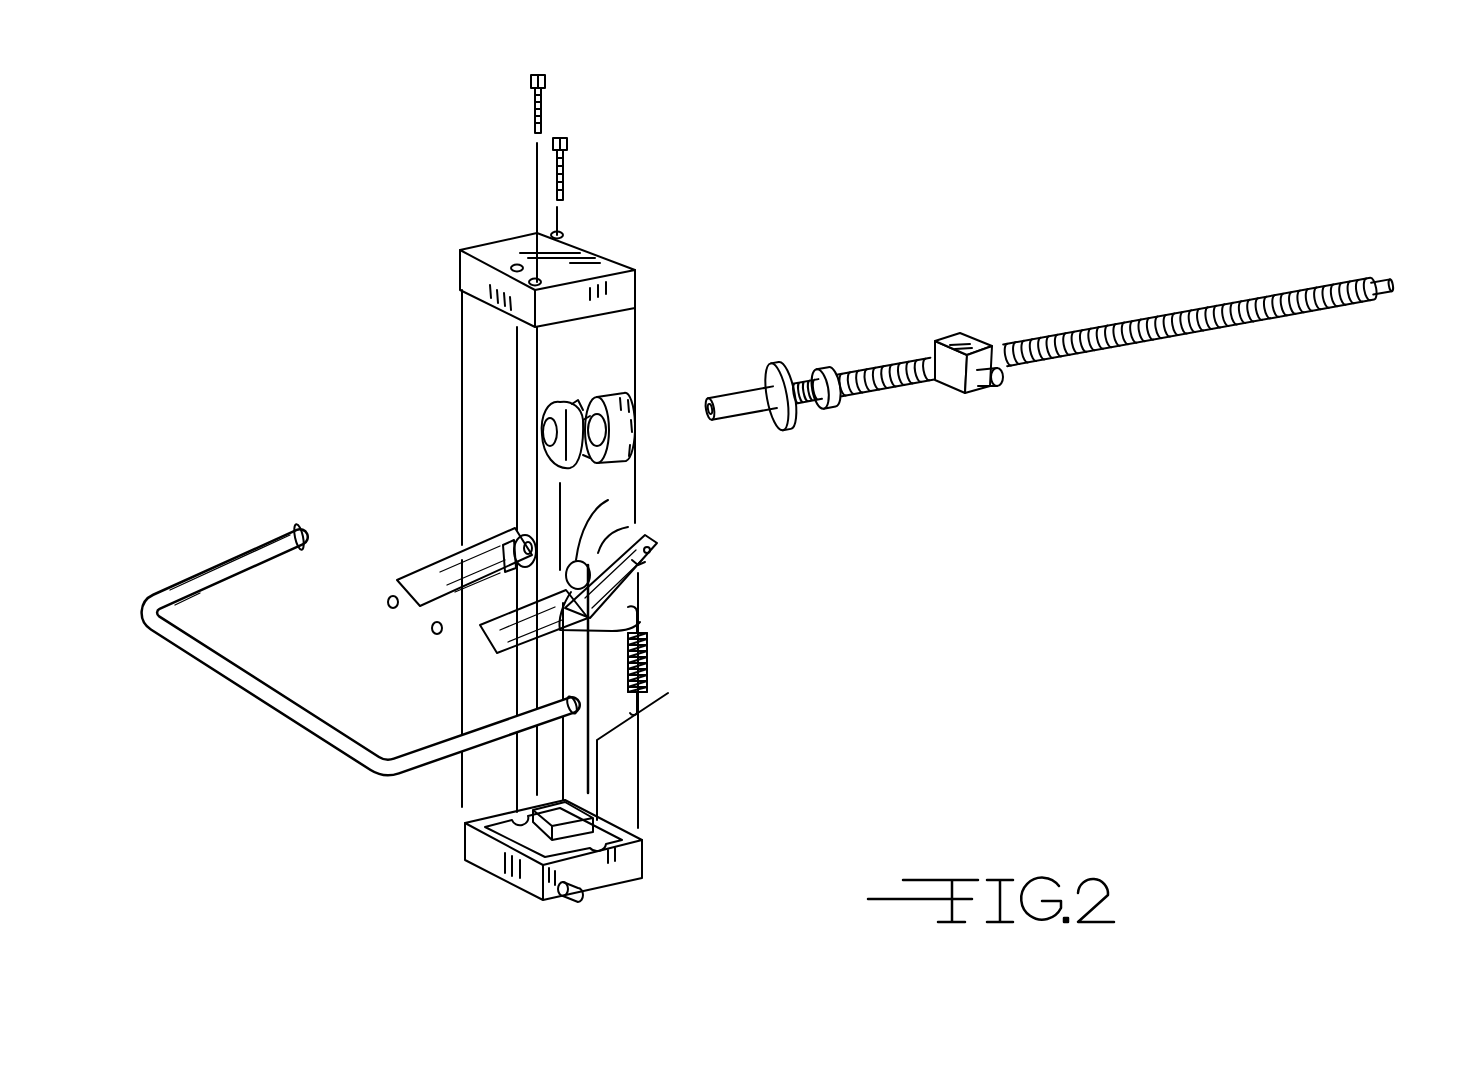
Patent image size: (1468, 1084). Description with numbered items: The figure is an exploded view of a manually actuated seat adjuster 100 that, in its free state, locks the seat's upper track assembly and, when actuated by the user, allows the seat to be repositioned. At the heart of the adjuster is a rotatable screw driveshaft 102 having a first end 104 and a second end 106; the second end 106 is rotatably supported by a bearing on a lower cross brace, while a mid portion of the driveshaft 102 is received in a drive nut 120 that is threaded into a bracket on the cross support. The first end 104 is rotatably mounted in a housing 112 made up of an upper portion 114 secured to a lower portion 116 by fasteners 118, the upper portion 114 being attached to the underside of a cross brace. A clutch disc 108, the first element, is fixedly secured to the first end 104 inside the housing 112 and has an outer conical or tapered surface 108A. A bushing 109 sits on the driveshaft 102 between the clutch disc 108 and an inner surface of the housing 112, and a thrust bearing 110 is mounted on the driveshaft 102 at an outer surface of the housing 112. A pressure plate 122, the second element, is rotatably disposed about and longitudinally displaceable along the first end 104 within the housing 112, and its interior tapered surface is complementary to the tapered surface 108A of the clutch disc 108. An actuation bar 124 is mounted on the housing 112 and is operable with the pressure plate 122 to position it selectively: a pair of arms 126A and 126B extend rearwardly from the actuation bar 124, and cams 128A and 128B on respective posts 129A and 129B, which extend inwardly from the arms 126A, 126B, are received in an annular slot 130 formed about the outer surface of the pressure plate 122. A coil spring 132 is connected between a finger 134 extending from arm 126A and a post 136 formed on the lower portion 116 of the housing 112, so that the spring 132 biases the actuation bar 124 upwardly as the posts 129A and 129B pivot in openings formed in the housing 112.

The seat adjuster 100 is at (738, 177).
The screw driveshaft 102 is at (1070, 330).
The first end 104 is at (732, 400).
The second end 106 is at (1375, 283).
The clutch disc 108 is at (768, 366).
The tapered surface 108A is at (770, 430).
The bushing 109 is at (818, 402).
The thrust bearing 110 is at (830, 366).
The housing 112 is at (462, 283).
The upper portion 114 is at (497, 255).
The lower portion 116 is at (488, 858).
The fasteners 118 is at (550, 82).
The drive nut 120 is at (975, 336).
The pressure plate 122 is at (612, 385).
The actuation bar 124 is at (280, 716).
The arm 126A is at (623, 634).
The arm 126B is at (432, 573).
The cam 128A is at (608, 500).
The cam 128B is at (516, 532).
The post 129A is at (584, 563).
The post 129B is at (516, 550).
The annular slot 130 is at (574, 402).
The spring 132 is at (647, 650).
The finger 134 is at (645, 565).
The post 136 is at (590, 893).